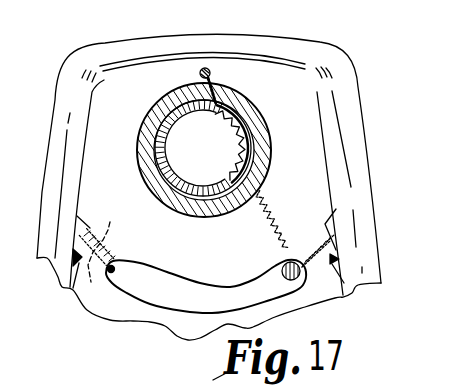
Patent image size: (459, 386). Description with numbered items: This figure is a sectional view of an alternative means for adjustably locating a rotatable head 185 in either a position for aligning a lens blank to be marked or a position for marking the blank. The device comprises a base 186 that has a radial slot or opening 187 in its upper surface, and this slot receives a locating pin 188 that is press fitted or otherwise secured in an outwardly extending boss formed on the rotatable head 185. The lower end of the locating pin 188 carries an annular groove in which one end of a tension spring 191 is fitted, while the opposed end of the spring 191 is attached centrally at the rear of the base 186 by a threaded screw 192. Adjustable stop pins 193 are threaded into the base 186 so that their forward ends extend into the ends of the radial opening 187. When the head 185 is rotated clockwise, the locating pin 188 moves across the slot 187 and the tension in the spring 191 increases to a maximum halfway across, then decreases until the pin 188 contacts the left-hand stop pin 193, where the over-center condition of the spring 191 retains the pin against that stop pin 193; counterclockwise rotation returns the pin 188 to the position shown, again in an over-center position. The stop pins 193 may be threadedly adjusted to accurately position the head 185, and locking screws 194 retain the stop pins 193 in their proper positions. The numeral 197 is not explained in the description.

The rotatable head 185 is at (153, 118).
The base 186 is at (87, 162).
The radial slot or opening 187 is at (160, 288).
The locating pin 188 is at (283, 278).
The tension spring 191 is at (226, 137).
The threaded screw 192 is at (205, 69).
The adjustable stop pins 193 is at (210, 236).
The locking screws 194 is at (386, 258).
The lower member 197 is at (196, 378).